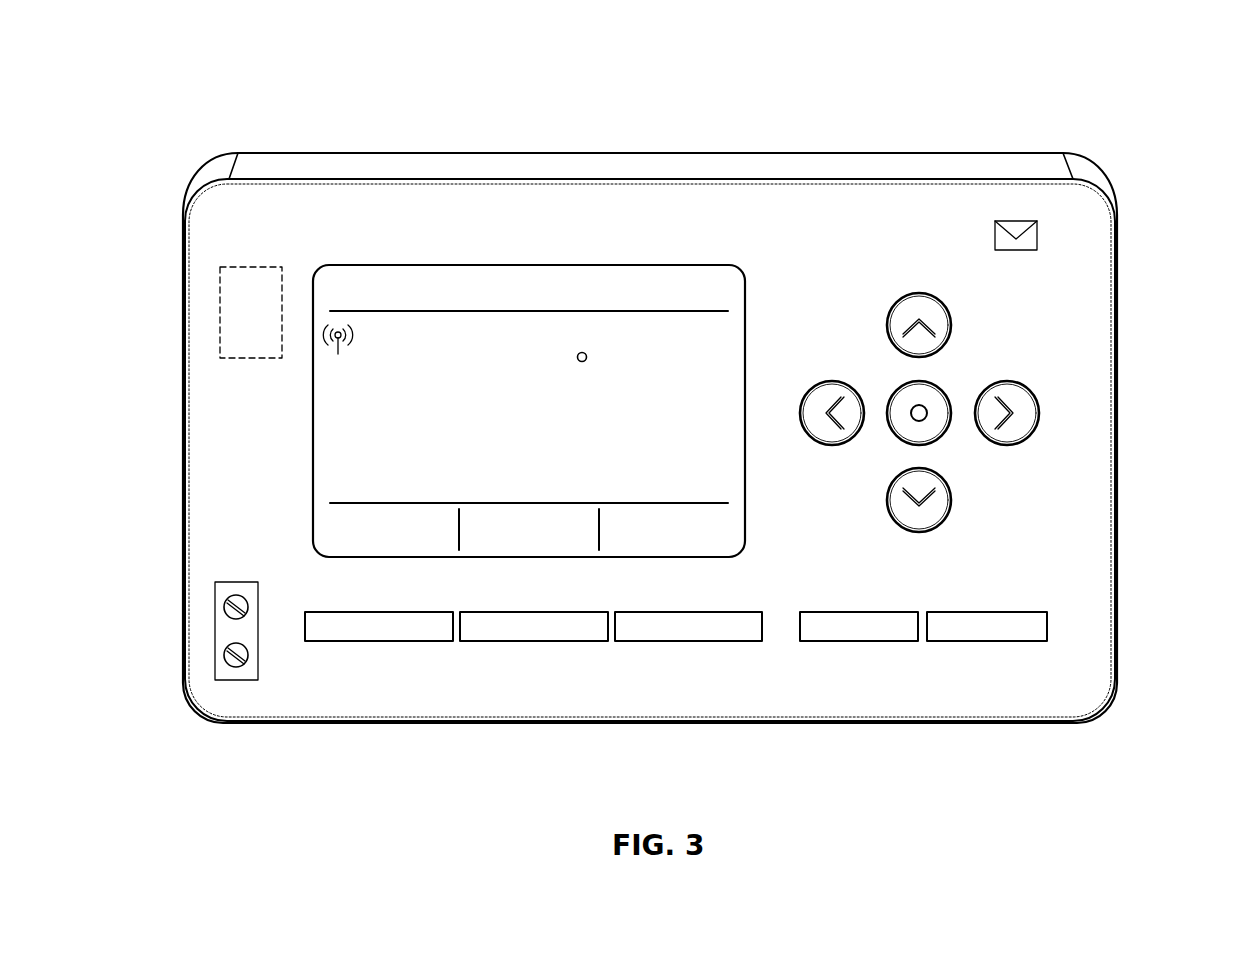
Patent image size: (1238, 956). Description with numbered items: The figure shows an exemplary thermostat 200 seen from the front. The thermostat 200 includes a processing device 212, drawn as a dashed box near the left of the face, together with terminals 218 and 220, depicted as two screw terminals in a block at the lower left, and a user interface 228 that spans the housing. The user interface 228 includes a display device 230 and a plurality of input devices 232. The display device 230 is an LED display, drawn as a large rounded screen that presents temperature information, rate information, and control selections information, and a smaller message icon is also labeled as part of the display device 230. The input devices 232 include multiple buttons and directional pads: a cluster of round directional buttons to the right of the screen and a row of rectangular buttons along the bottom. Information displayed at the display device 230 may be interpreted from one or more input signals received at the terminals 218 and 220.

The thermostat 200 is at (222, 66).
The processing device 212 is at (272, 325).
The terminal 218 is at (224, 655).
The terminal 220 is at (224, 607).
The user interface 228 is at (376, 165).
The display device 230 is at (528, 282).
The input devices 232 is at (832, 381).